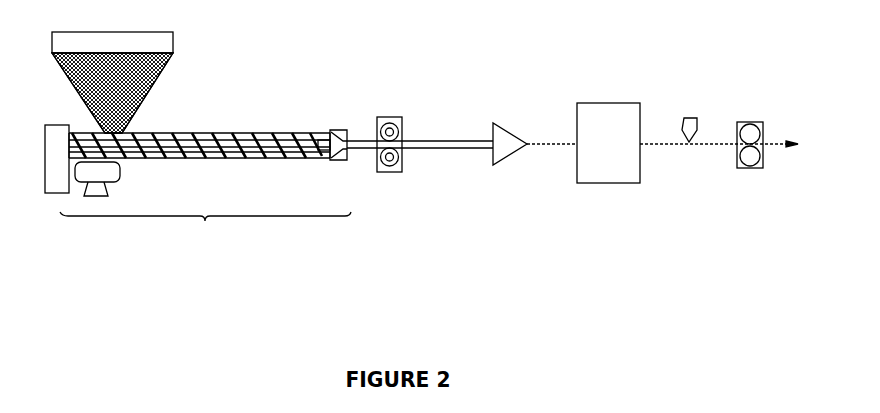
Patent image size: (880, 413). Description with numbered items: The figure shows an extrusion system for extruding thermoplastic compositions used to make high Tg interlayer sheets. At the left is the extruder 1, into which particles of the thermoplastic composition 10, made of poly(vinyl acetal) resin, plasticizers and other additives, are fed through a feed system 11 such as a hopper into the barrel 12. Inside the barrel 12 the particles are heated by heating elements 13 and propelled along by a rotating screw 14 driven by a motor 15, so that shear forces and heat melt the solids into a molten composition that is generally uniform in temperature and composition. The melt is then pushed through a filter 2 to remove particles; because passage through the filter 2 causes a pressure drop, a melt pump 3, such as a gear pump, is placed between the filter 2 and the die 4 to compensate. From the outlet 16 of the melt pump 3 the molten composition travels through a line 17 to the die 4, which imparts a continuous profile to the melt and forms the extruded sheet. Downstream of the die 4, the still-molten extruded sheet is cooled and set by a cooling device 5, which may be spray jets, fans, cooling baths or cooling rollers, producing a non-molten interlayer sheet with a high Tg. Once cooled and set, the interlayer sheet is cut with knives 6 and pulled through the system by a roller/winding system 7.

The extruder 1 is at (205, 228).
The filter 2 is at (337, 130).
The melt pump 3 is at (397, 117).
The die 4 is at (500, 165).
The cooling device 5 is at (610, 103).
The knives 6 is at (693, 118).
The roller/winding system 7 is at (752, 122).
The thermoplastic composition 10 is at (160, 75).
The feed system 11 is at (173, 44).
The barrel 12 is at (167, 130).
The heating elements 13 is at (272, 133).
The rotating screw 14 is at (244, 133).
The motor 15 is at (120, 178).
The outlet 16 is at (398, 153).
The line 17 is at (432, 141).